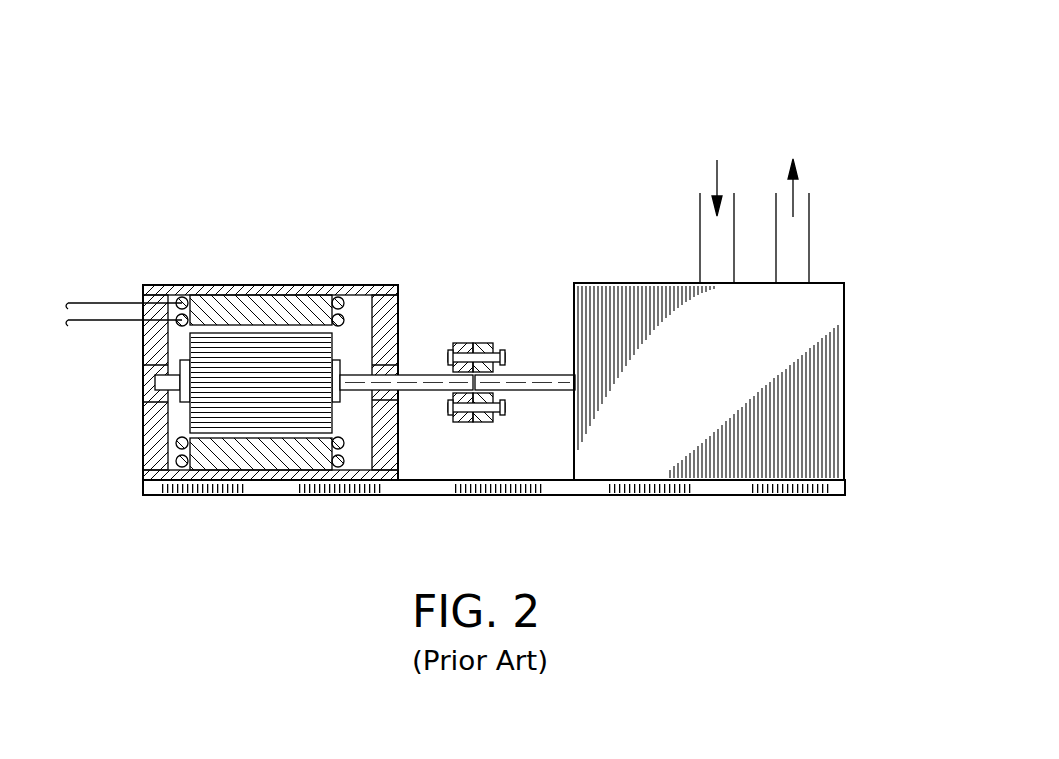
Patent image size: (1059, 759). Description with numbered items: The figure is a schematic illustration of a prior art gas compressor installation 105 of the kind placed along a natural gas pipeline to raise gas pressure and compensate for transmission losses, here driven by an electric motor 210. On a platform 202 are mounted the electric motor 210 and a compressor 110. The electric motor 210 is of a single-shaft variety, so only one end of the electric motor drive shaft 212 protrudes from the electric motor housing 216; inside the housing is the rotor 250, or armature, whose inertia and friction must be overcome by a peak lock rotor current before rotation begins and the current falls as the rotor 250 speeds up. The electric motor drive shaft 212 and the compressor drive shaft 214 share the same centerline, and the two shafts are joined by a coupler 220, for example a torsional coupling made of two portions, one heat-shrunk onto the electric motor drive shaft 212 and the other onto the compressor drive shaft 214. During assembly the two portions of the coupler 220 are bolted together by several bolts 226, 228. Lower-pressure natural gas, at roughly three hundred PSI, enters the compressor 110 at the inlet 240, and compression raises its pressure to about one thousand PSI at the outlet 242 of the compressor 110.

The compressor installation 105 is at (704, 65).
The compressor 110 is at (723, 318).
The platform 202 is at (677, 488).
The electric motor 210 is at (262, 250).
The electric motor drive shaft 212 is at (427, 383).
The compressor drive shaft 214 is at (537, 385).
The electric motor housing 216 is at (200, 285).
The coupler 220 is at (485, 402).
The bolts 226 is at (482, 352).
The coupling bolt 228 is at (484, 418).
The inlet 240 is at (699, 222).
The outlet 242 is at (810, 222).
The rotor 250 is at (175, 415).